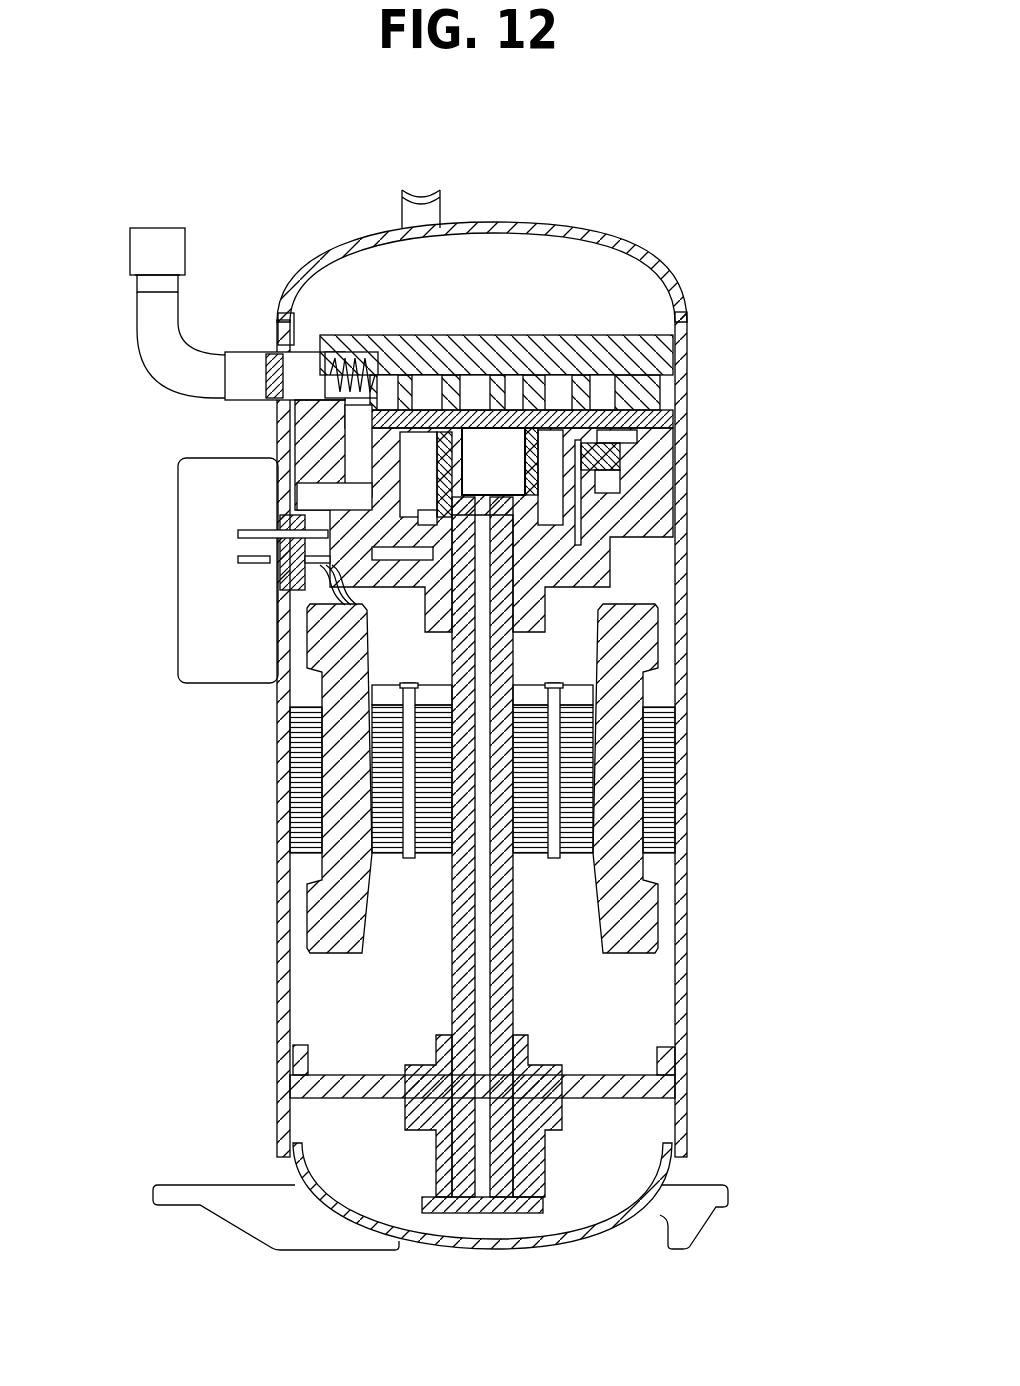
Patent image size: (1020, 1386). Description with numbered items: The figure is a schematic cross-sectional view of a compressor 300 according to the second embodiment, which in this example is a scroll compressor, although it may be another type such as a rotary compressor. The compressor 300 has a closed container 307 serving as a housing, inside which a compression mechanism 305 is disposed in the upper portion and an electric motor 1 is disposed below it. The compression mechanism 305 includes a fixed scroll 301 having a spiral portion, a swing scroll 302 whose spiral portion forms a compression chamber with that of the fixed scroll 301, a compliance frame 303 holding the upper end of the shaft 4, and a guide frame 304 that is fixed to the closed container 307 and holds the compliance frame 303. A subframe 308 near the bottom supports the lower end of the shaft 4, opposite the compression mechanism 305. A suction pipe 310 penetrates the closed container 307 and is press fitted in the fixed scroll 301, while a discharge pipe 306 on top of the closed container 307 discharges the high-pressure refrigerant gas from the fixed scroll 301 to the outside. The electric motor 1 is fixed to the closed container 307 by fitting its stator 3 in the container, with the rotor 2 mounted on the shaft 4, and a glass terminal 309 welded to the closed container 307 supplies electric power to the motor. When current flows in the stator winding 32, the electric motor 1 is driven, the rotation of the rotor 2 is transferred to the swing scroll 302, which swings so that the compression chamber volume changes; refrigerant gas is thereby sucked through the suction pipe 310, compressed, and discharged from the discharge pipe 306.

The compressor 300 is at (658, 207).
The electric motor 1 is at (564, 776).
The rotor 2 is at (575, 770).
The stator 3 is at (665, 742).
The shaft 4 is at (452, 993).
The stator winding 32 is at (648, 630).
The fixed scroll 301 is at (662, 368).
The swing scroll 302 is at (605, 397).
The compliance frame 303 is at (611, 472).
The guide frame 304 is at (654, 505).
The compression mechanism 305 is at (578, 481).
The discharge pipe 306 is at (421, 200).
The closed container 307 is at (688, 1010).
The subframe 308 is at (638, 1086).
The glass terminal 309 is at (265, 546).
The suction pipe 310 is at (190, 372).